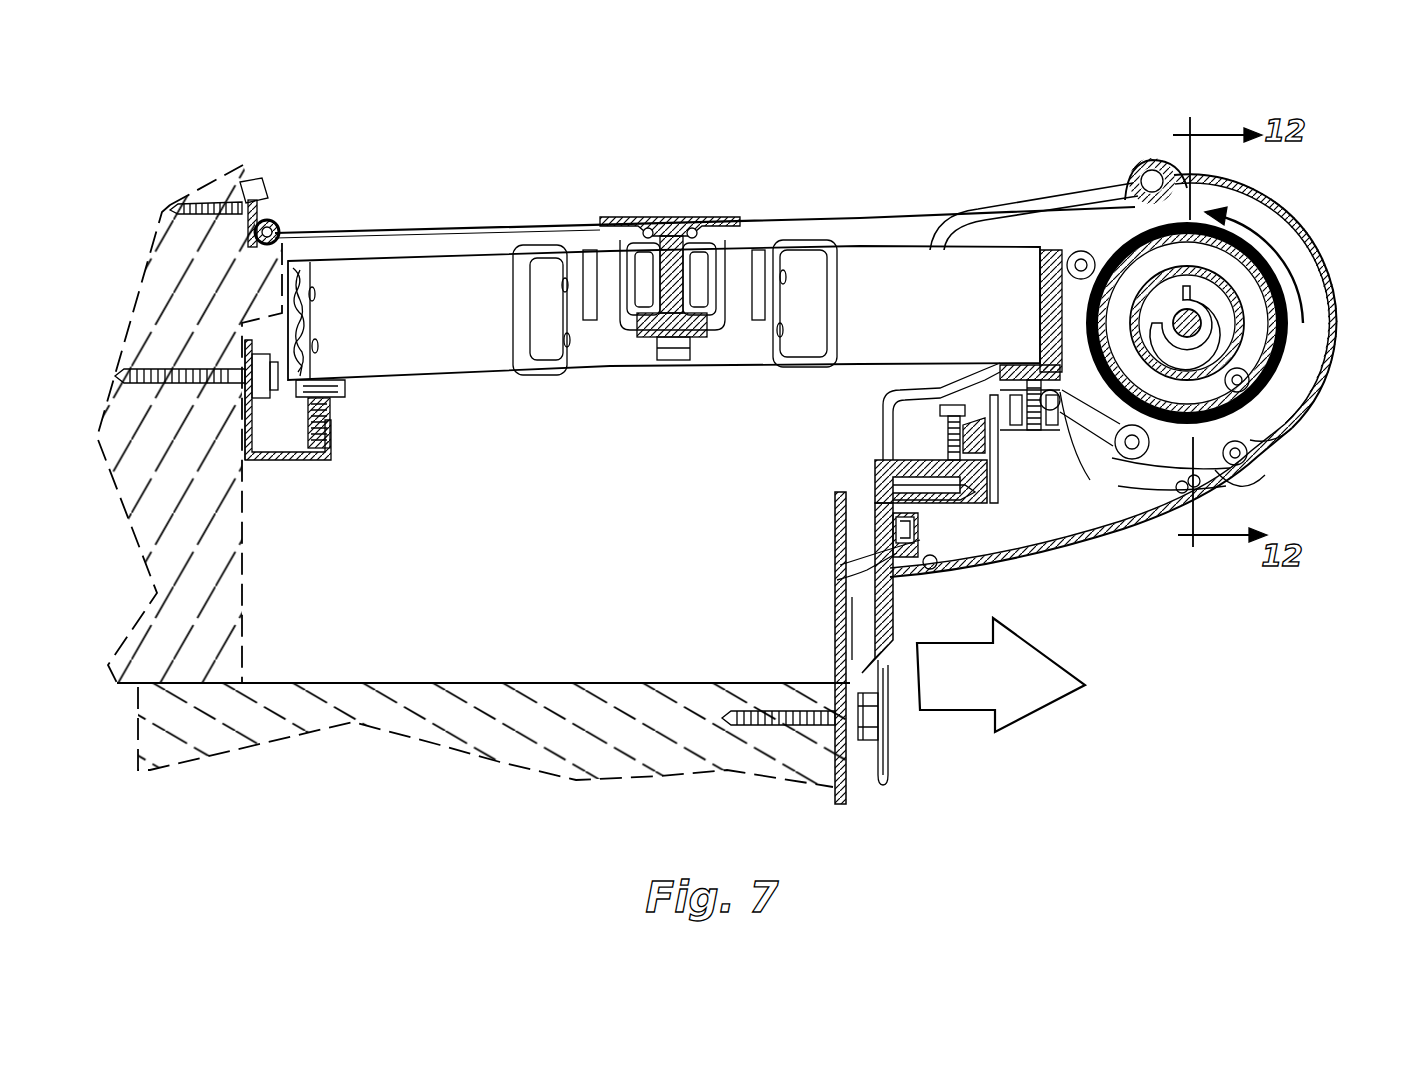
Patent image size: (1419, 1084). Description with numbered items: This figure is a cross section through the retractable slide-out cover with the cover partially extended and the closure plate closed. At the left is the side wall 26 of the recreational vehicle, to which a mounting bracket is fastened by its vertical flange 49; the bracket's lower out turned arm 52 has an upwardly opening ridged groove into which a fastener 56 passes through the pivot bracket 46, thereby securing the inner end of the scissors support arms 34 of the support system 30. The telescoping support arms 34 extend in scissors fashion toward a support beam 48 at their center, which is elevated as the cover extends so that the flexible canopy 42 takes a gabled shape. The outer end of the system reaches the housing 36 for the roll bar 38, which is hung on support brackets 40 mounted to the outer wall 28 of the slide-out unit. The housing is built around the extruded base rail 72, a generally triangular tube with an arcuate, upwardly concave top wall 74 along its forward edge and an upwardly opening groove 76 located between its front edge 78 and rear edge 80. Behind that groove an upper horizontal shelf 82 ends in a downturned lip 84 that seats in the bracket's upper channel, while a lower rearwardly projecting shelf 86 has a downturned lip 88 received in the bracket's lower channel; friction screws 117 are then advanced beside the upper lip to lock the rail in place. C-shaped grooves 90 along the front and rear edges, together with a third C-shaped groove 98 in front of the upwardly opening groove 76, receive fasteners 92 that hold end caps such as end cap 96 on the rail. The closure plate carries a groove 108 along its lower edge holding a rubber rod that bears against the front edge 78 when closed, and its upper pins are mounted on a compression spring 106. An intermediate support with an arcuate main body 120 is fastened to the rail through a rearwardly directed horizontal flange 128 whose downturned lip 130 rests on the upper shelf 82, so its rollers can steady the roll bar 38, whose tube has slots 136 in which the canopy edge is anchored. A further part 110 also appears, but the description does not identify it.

The side wall 26 is at (253, 600).
The outer wall 28 is at (845, 783).
The support system 30 is at (572, 400).
The support arms 34 is at (392, 295).
The housing 36 is at (1106, 176).
The roll bar 38 is at (1262, 356).
The support brackets 40 is at (918, 603).
The flexible canopy 42 is at (1073, 237).
The pivot bracket 46 is at (347, 388).
The support beam 48 is at (690, 225).
The vertical flange 49 is at (257, 430).
The lower out turned arm 52 is at (290, 460).
The fastener 56 is at (330, 425).
The extruded base rail 72 is at (1045, 560).
The top wall 74 is at (1135, 478).
The upwardly opening groove 76 is at (1034, 412).
The front edge 78 is at (1248, 495).
The rear edge 80 is at (877, 562).
The upper horizontal shelf 82 is at (1050, 392).
The downturned lip 84 is at (953, 497).
The lower rearwardly projecting shelf 86 is at (877, 497).
The downturned lip 88 is at (893, 524).
The C-shaped grooves 90 is at (950, 557).
The fasteners 92 is at (870, 562).
The end cap 96 is at (1257, 225).
The third C-shaped groove 98 is at (1078, 422).
The compression spring 106 is at (1322, 262).
The groove 108 is at (1248, 470).
The stop 110 is at (1280, 432).
The friction screws 117 is at (940, 446).
The arcuate main body 120 is at (1040, 345).
The horizontal flange 128 is at (920, 374).
The downturned lip 130 is at (892, 406).
The slots 136 is at (1262, 392).